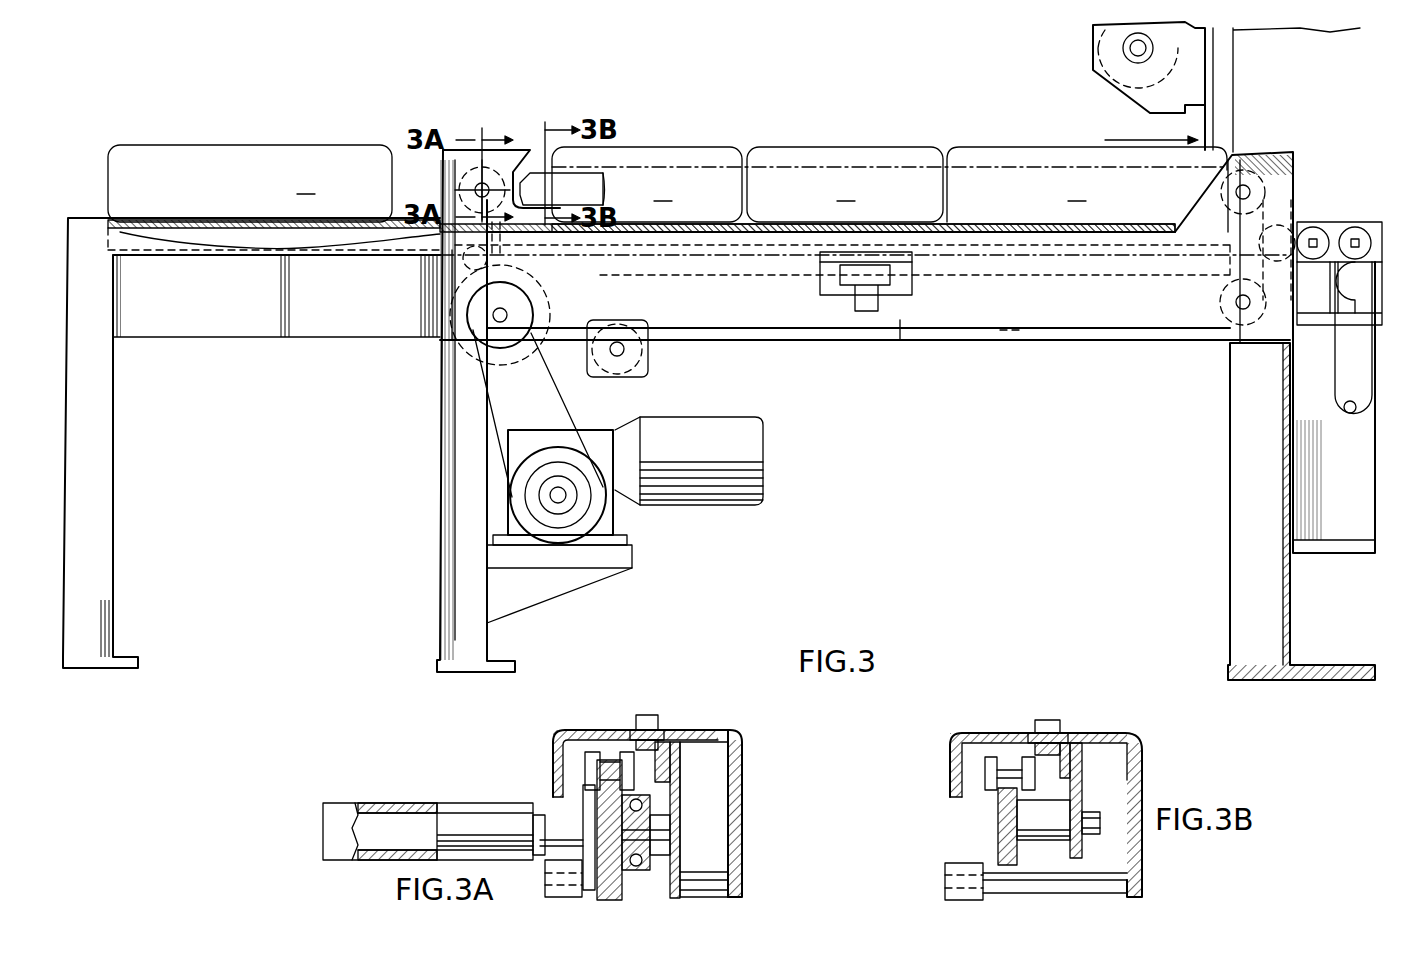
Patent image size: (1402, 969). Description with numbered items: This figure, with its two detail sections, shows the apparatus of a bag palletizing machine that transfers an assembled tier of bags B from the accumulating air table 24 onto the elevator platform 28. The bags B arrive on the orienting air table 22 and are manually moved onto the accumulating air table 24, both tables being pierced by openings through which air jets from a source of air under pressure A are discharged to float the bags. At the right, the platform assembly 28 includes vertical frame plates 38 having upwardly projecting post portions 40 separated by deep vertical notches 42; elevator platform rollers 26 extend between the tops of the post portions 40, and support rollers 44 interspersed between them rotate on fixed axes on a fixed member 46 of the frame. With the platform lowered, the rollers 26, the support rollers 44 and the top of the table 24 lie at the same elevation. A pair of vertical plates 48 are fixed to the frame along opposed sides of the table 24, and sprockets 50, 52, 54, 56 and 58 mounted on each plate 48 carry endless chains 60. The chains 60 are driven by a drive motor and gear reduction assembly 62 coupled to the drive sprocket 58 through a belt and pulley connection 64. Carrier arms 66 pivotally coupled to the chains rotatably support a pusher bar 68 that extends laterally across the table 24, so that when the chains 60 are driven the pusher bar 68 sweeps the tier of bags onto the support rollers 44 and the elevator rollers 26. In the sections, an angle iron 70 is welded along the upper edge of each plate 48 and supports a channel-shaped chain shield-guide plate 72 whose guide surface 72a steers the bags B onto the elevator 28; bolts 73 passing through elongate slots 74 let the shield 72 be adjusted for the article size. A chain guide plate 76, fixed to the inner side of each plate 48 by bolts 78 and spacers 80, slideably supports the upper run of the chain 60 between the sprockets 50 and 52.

In FIG. 3, the orienting air table 22 is at (208, 222).
In FIG. 3, the accumulating air table 24 is at (700, 228).
In FIG. 3, the elevator platform rollers 26 is at (1313, 227).
In FIG. 3, the elevator platform 28 is at (1295, 388).
In FIG. 3, the frame plates 38 is at (1354, 508).
In FIG. 3, the post portions 40 is at (1372, 373).
In FIG. 3, the vertical notches 42 is at (1348, 413).
In FIG. 3, the support rollers 44 is at (1355, 232).
In FIG. 3, the fixed member 46 is at (1333, 222).
In FIG. 3A, the vertical plates 48 is at (690, 862).
In FIG. 3B, the vertical plates 48 is at (1100, 775).
In FIG. 3, the sprocket 50 is at (495, 170).
In FIG. 3A, the sprocket 50 is at (648, 796).
In FIG. 3, the sprocket 52 is at (1225, 178).
In FIG. 3, the sprocket 54 is at (1222, 292).
In FIG. 3, the sprocket 56 is at (640, 372).
In FIG. 3, the drive sprocket 58 is at (518, 290).
In FIG. 3, the endless chains 60 is at (860, 165).
In FIG. 3A, the endless chains 60 is at (610, 755).
In FIG. 3B, the endless chains 60 is at (975, 758).
In FIG. 3, the drive motor and gear reduction assembly 62 is at (530, 430).
In FIG. 3, the belt and pulley connection 64 is at (580, 395).
In FIG. 3A, the carrier arms 66 is at (552, 812).
In FIG. 3, the pusher bar 68 is at (1270, 170).
In FIG. 3A, the pusher bar 68 is at (470, 815).
In FIG. 3A, the angle iron 70 is at (675, 760).
In FIG. 3B, the angle iron 70 is at (1075, 742).
In FIG. 3, the chain shield-guide plate 72 is at (952, 338).
In FIG. 3A, the chain shield-guide plate 72 is at (742, 758).
In FIG. 3A, the guide surface 72a is at (552, 752).
In FIG. 3B, the guide surface 72a is at (948, 750).
In FIG. 3A, the bolts 73 is at (650, 720).
In FIG. 3B, the bolts 73 is at (1040, 720).
In FIG. 3A, the elongate slots 74 is at (713, 732).
In FIG. 3B, the elongate slots 74 is at (1105, 732).
In FIG. 3, the chain guide plate 76 is at (590, 190).
In FIG. 3B, the chain guide plate 76 is at (1005, 843).
In FIG. 3B, the bolts 78 is at (1100, 832).
In FIG. 3B, the spacers 80 is at (1030, 815).
In FIG. 3, the source of air under pressure A is at (843, 275).
In FIG. 3, the bags B is at (691, 185).